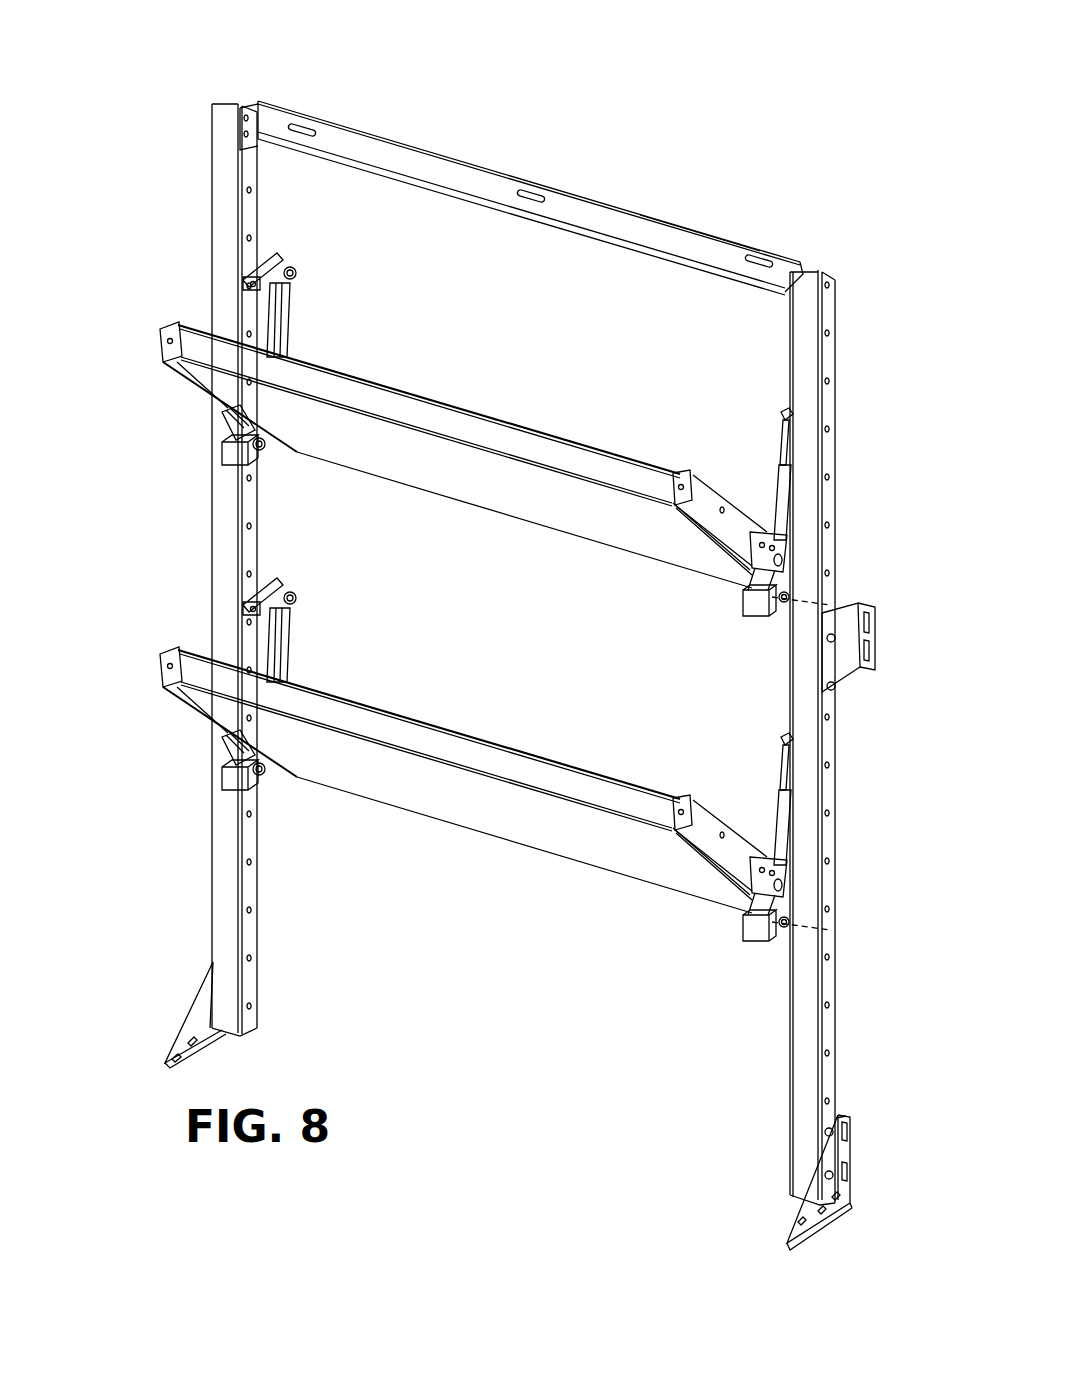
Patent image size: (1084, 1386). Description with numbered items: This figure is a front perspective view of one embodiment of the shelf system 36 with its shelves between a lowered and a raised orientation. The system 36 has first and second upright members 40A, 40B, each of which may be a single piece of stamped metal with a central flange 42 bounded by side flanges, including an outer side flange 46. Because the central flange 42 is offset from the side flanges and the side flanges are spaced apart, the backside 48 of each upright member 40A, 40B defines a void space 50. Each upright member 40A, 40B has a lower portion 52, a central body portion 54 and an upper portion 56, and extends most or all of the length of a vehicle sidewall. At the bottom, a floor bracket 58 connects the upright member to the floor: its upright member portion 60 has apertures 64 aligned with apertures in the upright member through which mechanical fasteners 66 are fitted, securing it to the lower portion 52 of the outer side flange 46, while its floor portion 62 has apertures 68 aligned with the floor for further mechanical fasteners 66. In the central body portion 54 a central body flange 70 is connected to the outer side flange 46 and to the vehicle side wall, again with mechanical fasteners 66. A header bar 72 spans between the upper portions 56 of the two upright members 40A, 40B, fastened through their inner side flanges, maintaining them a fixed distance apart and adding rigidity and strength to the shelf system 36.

The shelf system 36 is at (514, 167).
The upright member 40A is at (218, 130).
The upright member 40B is at (810, 345).
The central flange 42 is at (218, 188).
The outer side flange 46 is at (830, 515).
The backside 48 is at (232, 103).
The void space 50 is at (817, 273).
The lower portion 52 is at (197, 917).
The central body portion 54 is at (197, 552).
The upper portion 56 is at (198, 250).
The floor bracket 58 is at (215, 1035).
The upright member portion 60 is at (852, 1150).
The floor portion 62 is at (855, 1205).
The apertures 64 is at (824, 1175).
The mechanical fasteners 66 is at (836, 1124).
The apertures 68 is at (170, 1055).
The central body flange 70 is at (840, 672).
The header bar 72 is at (698, 242).